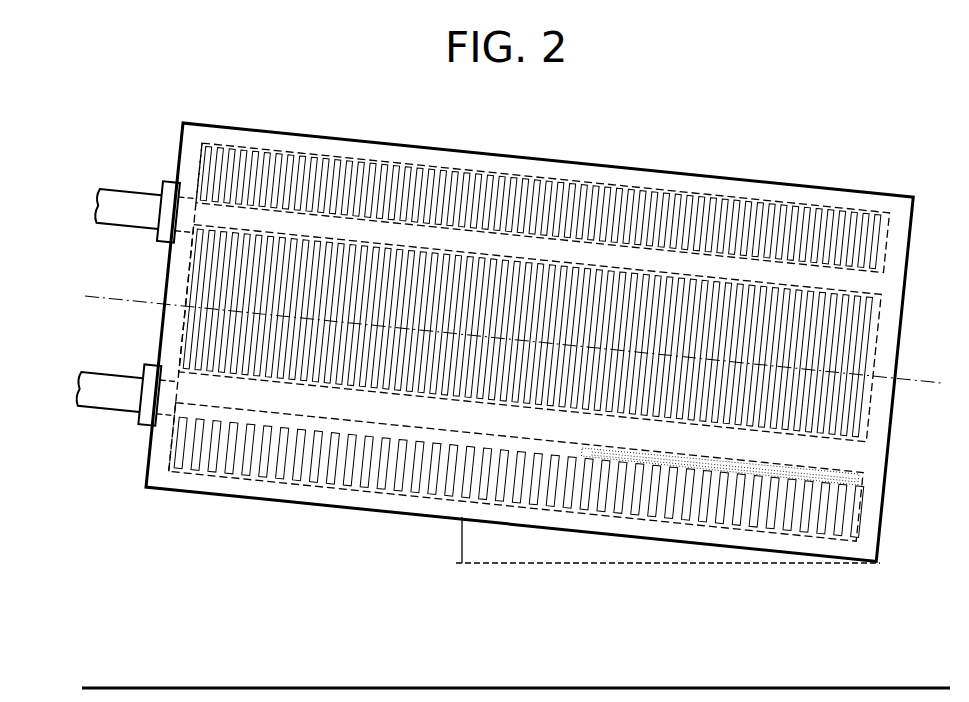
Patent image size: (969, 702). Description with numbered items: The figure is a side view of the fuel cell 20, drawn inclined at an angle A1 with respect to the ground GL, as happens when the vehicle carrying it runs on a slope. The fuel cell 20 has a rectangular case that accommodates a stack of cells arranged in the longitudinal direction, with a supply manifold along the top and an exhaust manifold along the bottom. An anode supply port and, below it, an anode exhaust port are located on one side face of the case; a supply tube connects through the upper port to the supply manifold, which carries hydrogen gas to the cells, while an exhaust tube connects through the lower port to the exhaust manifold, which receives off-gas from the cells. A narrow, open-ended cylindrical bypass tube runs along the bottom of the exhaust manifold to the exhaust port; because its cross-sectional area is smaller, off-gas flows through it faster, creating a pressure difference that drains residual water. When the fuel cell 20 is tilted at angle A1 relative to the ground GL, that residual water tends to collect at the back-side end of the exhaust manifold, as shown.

The fuel cell 20 is at (841, 131).
The angle A1 is at (649, 540).
The ground GL is at (889, 682).